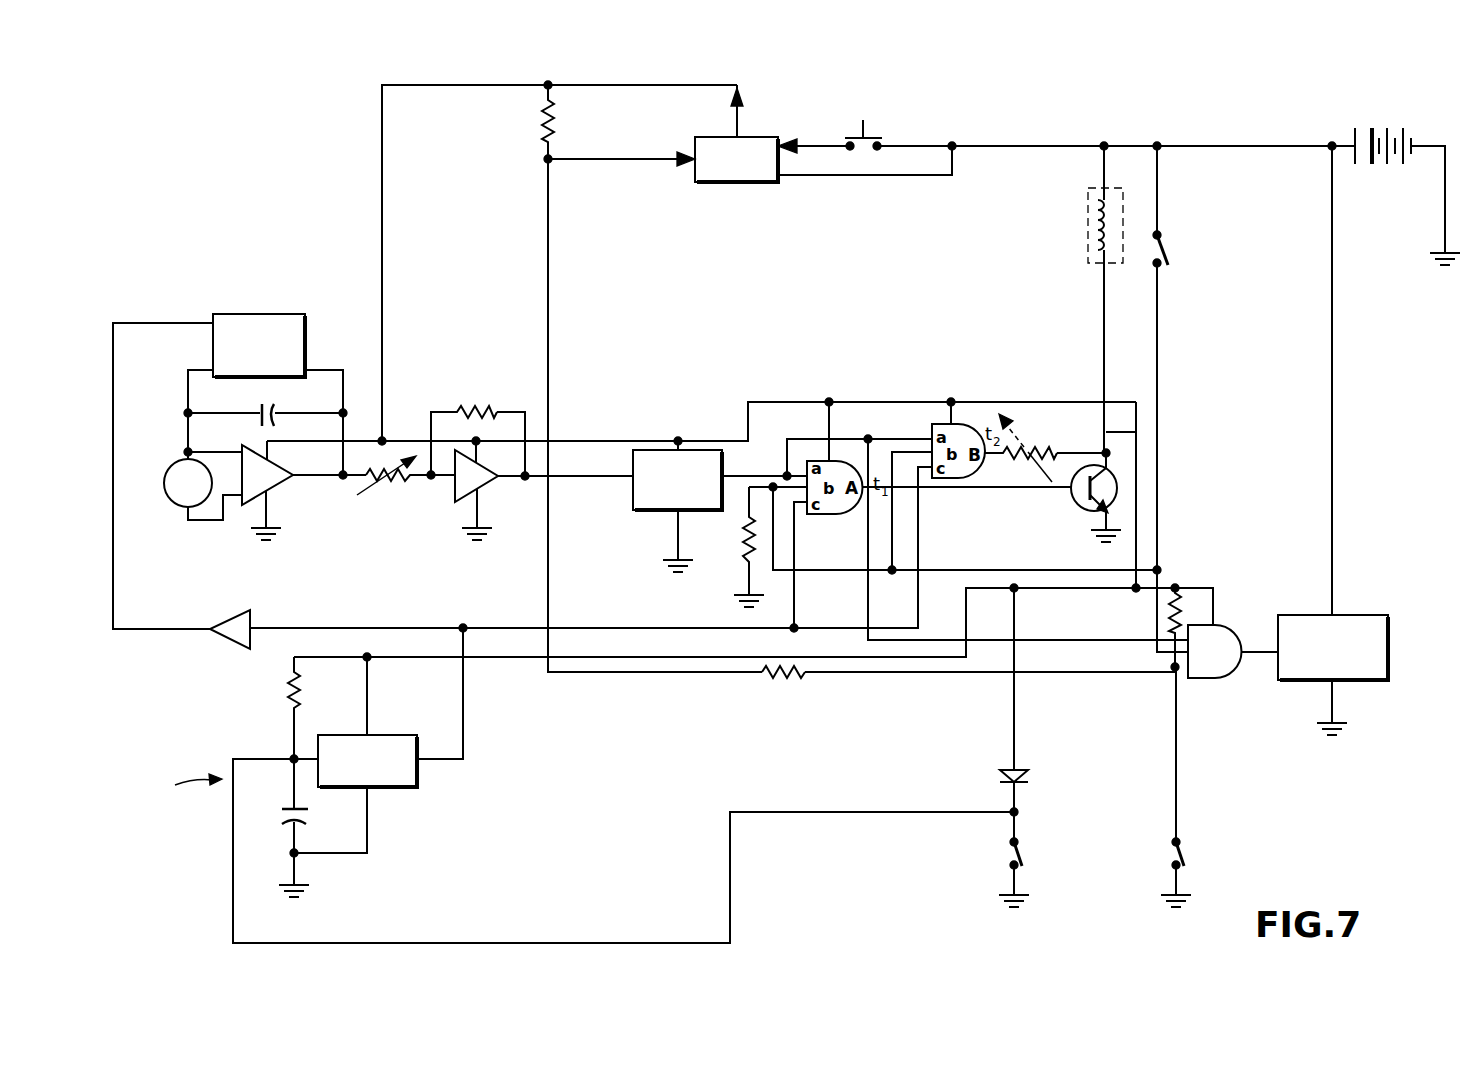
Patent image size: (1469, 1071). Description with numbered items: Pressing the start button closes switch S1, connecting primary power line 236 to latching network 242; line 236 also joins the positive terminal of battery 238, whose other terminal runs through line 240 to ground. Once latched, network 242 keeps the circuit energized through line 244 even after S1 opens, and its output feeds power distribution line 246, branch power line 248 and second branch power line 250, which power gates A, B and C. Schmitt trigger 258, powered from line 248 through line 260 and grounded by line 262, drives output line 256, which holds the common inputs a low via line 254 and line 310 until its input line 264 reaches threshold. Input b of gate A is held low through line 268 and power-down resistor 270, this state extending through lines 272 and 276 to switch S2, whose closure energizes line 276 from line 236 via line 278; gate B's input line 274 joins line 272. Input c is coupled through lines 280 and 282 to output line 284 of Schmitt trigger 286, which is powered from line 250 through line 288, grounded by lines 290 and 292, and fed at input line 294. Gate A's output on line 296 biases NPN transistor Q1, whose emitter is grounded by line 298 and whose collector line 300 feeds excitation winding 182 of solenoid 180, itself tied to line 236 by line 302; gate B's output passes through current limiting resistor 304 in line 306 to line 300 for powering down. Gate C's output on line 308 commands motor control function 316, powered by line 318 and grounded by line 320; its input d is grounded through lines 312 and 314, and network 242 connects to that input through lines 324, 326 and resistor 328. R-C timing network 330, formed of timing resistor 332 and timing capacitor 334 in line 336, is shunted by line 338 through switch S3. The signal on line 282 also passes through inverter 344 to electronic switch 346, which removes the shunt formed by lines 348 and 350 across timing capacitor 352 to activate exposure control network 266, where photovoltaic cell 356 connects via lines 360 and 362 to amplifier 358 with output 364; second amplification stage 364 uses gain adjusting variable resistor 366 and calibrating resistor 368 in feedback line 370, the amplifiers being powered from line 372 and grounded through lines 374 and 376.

The solenoid 180 is at (1056, 236).
The excitation winding 182 is at (1100, 240).
The primary power line 236 is at (1178, 146).
The battery 238 is at (1365, 130).
The line 240 is at (1445, 215).
The latching network 242 is at (752, 137).
The line 244 is at (905, 176).
The power distribution line 246 is at (607, 87).
The branch power line 248 is at (397, 440).
The second branch power line 250 is at (1043, 589).
The line 254 is at (891, 430).
The output line 256 is at (732, 474).
The Schmitt trigger 258 is at (641, 449).
The line 260 is at (680, 440).
The line 262 is at (675, 538).
The input line 264 is at (617, 478).
The exposure control network 266 is at (413, 344).
The line 268 is at (747, 512).
The power-down resistor 270 is at (746, 564).
The line 272 is at (835, 560).
The input line 274 is at (893, 528).
The line 276 is at (1158, 463).
The line 278 is at (1158, 214).
The line 280 is at (795, 606).
The line 282 is at (510, 612).
The line 284 is at (465, 725).
The Schmitt trigger 286 is at (116, 560).
The line 288 is at (368, 705).
The line 290 is at (370, 833).
The line 292 is at (292, 867).
The input line 294 is at (298, 757).
The line 296 is at (990, 489).
The line 298 is at (1110, 515).
The line 300 is at (1137, 431).
The line 302 is at (1065, 299).
The current limiting resistor 304 is at (1033, 445).
The line 306 is at (1080, 449).
The line 308 is at (1262, 656).
The line 310 is at (866, 526).
The line 312 is at (1180, 670).
The line 314 is at (1178, 795).
The motor control function 316 is at (1350, 613).
The line 318 is at (1334, 397).
The line 320 is at (1336, 708).
The line 324 is at (605, 160).
The line 326 is at (549, 297).
The resistor 328 is at (783, 680).
The R-C timing network 330 is at (175, 783).
The timing resistor 332 is at (285, 690).
The timing capacitor 334 is at (300, 821).
The line 336 is at (299, 806).
The line 338 is at (347, 942).
The inverter 344 is at (252, 627).
The electronic switch 346 is at (255, 313).
The line 348 is at (190, 393).
The line 350 is at (345, 392).
The timing capacitor 352 is at (275, 410).
The photovoltaic cell 356 is at (163, 480).
The operational differential-type amplifier 358 is at (276, 488).
The line 360 is at (212, 521).
The line 362 is at (230, 428).
The second amplification stage 364 is at (341, 467).
The gain adjusting variable resistor 366 is at (390, 483).
The calibrating resistor 368 is at (470, 410).
The feedback path line 370 is at (507, 411).
The line 372 is at (477, 457).
The line 374 is at (274, 521).
The line 376 is at (480, 515).
The switch S1 is at (866, 137).
The switch S2 is at (1168, 252).
The switch S3 is at (1021, 852).
The NPN transistor Q1 is at (1085, 507).